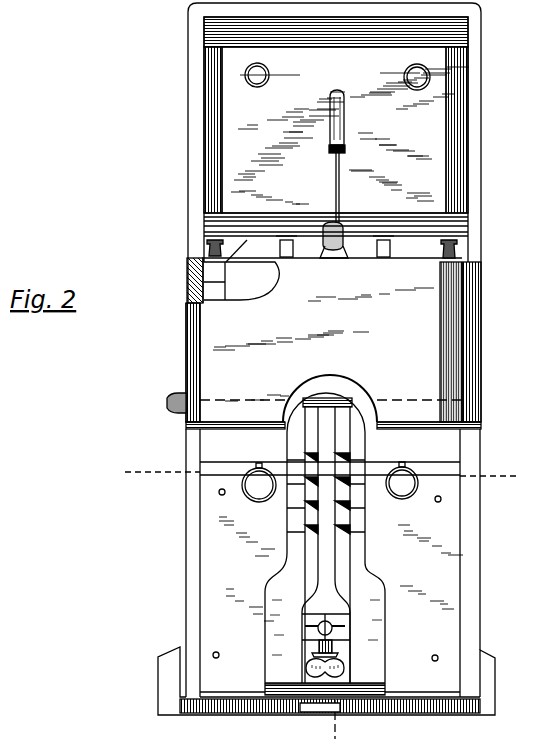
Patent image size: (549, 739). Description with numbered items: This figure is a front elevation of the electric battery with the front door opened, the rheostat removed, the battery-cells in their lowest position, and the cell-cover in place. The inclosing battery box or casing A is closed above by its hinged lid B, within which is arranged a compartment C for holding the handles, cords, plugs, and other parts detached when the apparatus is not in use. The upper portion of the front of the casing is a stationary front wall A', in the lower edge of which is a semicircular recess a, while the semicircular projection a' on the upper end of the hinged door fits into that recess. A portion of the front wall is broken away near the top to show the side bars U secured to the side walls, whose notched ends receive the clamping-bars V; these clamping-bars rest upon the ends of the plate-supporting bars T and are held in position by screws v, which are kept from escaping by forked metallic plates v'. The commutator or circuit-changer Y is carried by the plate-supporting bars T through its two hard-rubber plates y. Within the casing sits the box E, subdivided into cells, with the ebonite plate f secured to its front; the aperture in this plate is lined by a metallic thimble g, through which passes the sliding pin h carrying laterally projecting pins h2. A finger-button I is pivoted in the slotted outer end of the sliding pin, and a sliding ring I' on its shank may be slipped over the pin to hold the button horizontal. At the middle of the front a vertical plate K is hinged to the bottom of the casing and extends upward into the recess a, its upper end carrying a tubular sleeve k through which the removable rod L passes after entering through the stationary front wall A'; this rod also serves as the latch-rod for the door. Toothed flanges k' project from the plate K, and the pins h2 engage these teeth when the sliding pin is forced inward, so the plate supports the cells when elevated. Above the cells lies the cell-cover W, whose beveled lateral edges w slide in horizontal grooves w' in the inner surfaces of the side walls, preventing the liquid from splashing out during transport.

The hinged lid B is at (321, 212).
The compartment C is at (345, 130).
The commutator or circuit-changer Y is at (334, 186).
The screws v is at (332, 246).
The forked metallic plates v' is at (339, 248).
The clamping-bars V is at (242, 248).
The side bars U is at (173, 280).
The plate-supporting bars T is at (262, 268).
The stationary front wall A' is at (333, 343).
The removable rod L is at (200, 392).
The semicircular recess a is at (330, 397).
The tubular projection or sleeve k is at (333, 382).
The toothed flanges k' is at (318, 545).
The battery box or casing A is at (330, 584).
The lateral edges w is at (329, 459).
The hard-rubber plates y is at (323, 480).
The horizontal grooves w' is at (328, 489).
The cell-cover W is at (330, 470).
The box E is at (200, 564).
The ebonite plate f is at (232, 568).
The vertical plate K is at (380, 615).
The metallic bushing or thimble g is at (326, 605).
The sliding pin h is at (326, 618).
The pins h2 is at (326, 624).
The sliding ring or band I' is at (329, 650).
The finger-button I is at (353, 664).
The semicircular projection a' is at (320, 707).